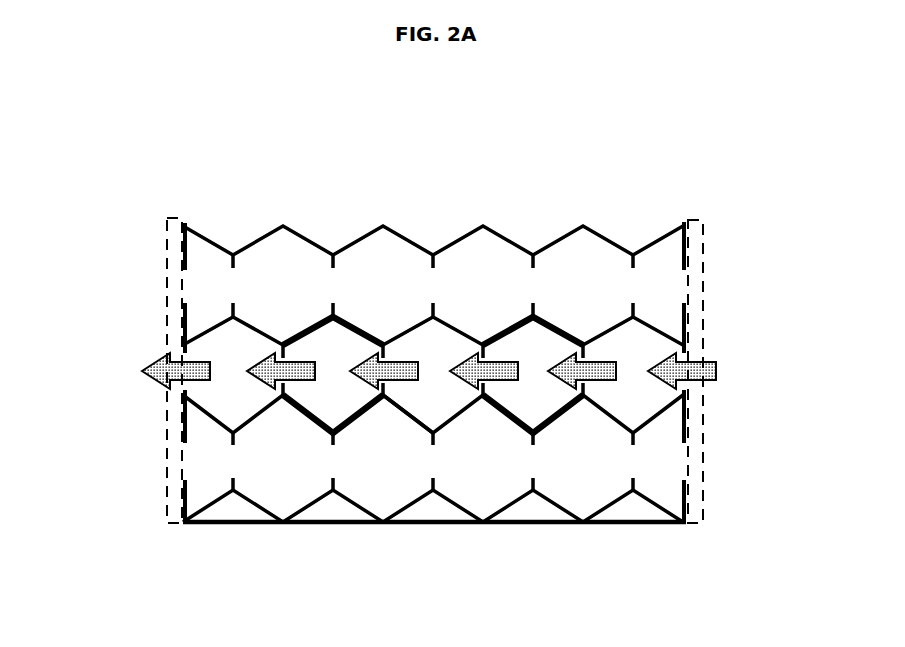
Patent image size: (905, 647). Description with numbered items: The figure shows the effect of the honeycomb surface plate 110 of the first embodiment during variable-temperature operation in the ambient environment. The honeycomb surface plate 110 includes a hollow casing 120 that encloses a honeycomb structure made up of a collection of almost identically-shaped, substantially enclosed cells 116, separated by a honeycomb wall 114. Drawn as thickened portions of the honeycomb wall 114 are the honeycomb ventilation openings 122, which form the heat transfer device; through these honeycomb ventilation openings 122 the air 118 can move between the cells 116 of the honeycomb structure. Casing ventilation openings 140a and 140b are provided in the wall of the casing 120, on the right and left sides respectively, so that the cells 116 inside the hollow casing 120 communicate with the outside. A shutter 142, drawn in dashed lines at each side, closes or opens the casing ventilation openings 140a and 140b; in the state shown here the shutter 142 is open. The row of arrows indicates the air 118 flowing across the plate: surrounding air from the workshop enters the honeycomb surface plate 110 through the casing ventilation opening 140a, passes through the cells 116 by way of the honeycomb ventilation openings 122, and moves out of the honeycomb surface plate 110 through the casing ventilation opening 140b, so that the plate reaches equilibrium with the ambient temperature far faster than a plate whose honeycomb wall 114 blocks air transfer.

The honeycomb surface plate 110 is at (556, 172).
The honeycomb wall 114 is at (407, 415).
The cells 116 is at (242, 347).
The air 118 is at (707, 384).
The hollow casing 120 is at (563, 523).
The honeycomb ventilation openings 122 is at (588, 392).
The casing ventilation opening 140a is at (696, 354).
The casing ventilation opening 140b is at (177, 357).
The shutter 142 is at (165, 250).